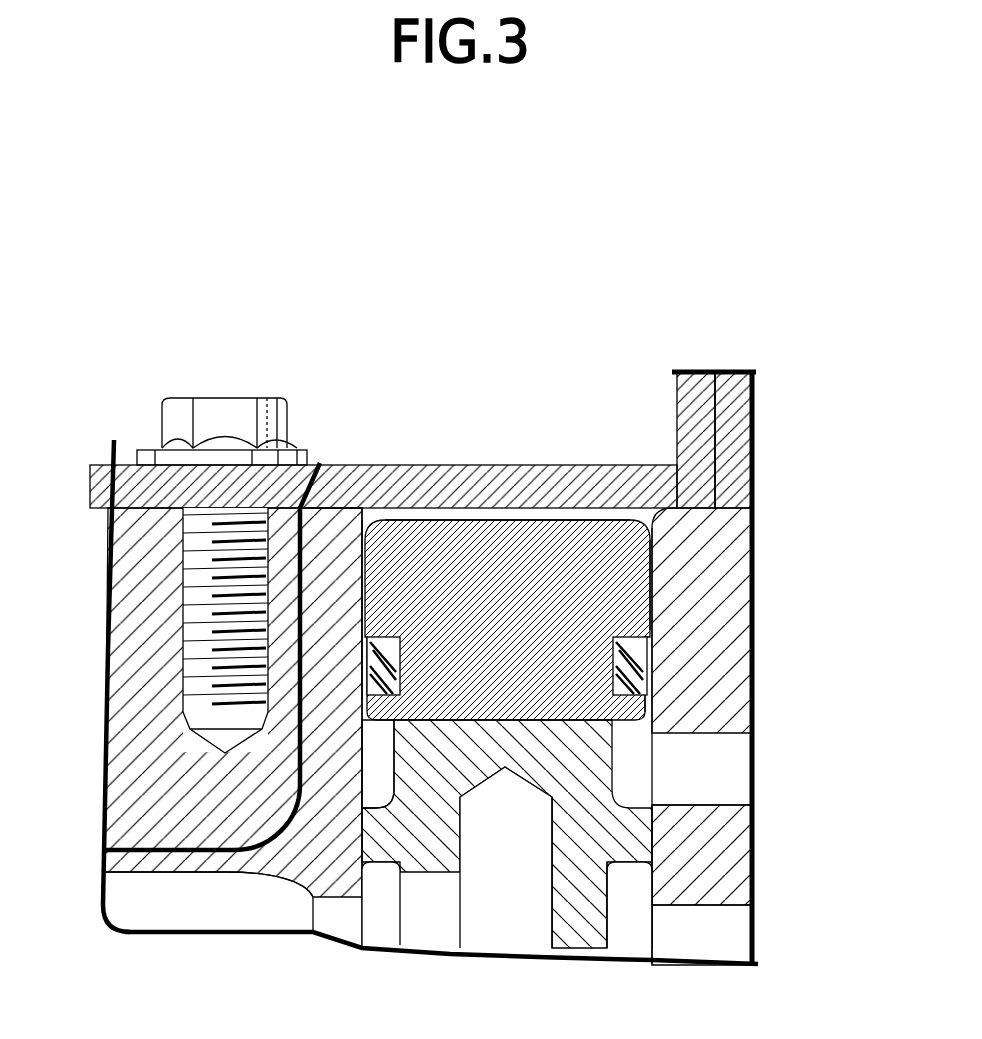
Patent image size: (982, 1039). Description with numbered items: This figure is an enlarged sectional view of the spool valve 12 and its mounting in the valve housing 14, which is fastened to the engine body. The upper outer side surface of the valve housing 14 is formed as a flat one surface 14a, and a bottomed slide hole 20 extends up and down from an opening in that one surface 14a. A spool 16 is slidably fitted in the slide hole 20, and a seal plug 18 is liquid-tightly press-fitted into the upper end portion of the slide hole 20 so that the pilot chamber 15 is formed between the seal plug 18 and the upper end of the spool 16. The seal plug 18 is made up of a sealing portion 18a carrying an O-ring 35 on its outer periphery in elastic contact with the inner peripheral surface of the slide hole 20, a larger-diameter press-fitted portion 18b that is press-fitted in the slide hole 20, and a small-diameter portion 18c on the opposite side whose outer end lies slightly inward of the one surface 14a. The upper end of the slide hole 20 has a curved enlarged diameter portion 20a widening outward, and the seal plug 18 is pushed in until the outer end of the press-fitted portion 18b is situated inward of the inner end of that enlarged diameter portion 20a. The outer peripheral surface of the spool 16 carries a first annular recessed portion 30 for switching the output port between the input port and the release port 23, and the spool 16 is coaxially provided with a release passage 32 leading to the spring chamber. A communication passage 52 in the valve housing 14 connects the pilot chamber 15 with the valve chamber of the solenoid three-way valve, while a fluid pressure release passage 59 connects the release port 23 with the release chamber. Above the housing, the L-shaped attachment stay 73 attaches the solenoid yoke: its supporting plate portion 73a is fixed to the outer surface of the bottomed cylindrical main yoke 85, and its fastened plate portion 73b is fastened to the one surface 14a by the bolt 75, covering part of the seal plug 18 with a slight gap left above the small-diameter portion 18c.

The spool valve 12 is at (102, 808).
The valve housing 14 is at (727, 552).
The one surface 14a is at (328, 507).
The pilot chamber 15 is at (372, 778).
The spool 16 is at (633, 832).
The seal plug 18 is at (556, 520).
The sealing portion 18a is at (647, 703).
The press-fitted portion 18b is at (653, 585).
The small-diameter portion 18c is at (500, 518).
The slide hole 20 is at (645, 897).
The enlarged diameter portion 20a is at (362, 520).
The release port 23 is at (215, 872).
The first annular recessed portion 30 is at (607, 920).
The release passage 32 is at (545, 918).
The O-ring 35 is at (630, 665).
The communication passage 52 is at (710, 805).
The fluid pressure release passage 59 is at (727, 934).
The attachment stay 73 is at (402, 388).
The supporting plate portion 73a is at (700, 425).
The fastened plate portion 73b is at (420, 465).
The bolt 75 is at (228, 415).
The main yoke 85 is at (737, 421).